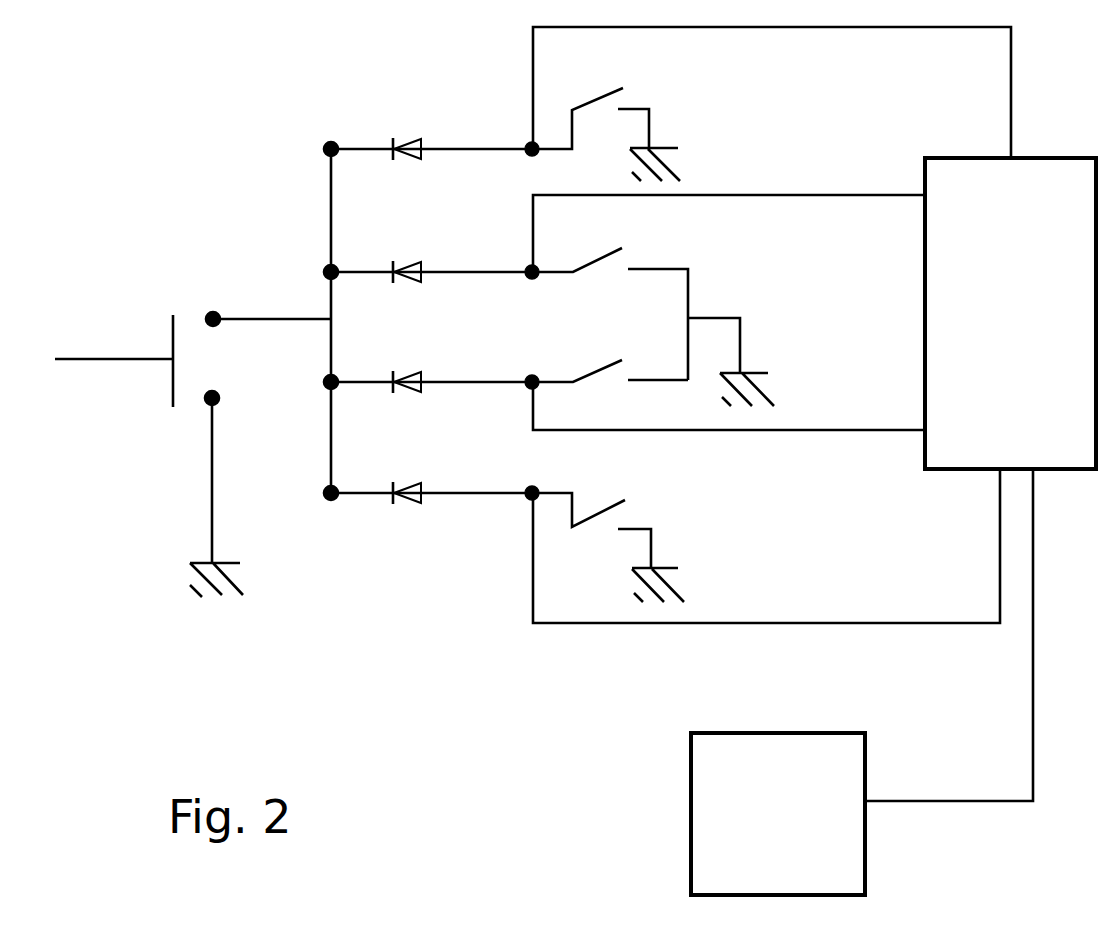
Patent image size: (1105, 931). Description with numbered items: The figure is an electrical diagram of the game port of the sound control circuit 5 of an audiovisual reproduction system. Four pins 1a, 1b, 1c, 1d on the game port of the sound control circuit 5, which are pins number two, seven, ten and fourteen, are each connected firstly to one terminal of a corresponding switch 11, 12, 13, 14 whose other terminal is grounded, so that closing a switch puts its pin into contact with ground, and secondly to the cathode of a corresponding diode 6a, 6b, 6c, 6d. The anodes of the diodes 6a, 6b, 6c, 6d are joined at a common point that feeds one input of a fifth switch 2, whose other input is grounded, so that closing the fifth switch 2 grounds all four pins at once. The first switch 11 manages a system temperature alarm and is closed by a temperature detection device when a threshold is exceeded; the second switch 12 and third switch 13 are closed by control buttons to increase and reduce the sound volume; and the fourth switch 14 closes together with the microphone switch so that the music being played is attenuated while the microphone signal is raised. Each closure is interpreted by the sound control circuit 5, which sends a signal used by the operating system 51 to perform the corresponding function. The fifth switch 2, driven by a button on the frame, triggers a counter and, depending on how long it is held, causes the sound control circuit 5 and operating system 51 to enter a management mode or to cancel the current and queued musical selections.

The fifth switch 2 is at (204, 350).
The diode 6a is at (418, 138).
The diode 6b is at (420, 263).
The diode 6c is at (420, 372).
The diode 6d is at (420, 483).
The pin 1a is at (528, 155).
The pin 1b is at (533, 283).
The pin 1c is at (536, 387).
The pin 1d is at (533, 503).
The first switch 11 is at (601, 114).
The second switch 12 is at (620, 264).
The third switch 13 is at (620, 372).
The fourth switch 14 is at (607, 522).
The sound control circuit 5 is at (1010, 313).
The operating system 51 is at (778, 814).